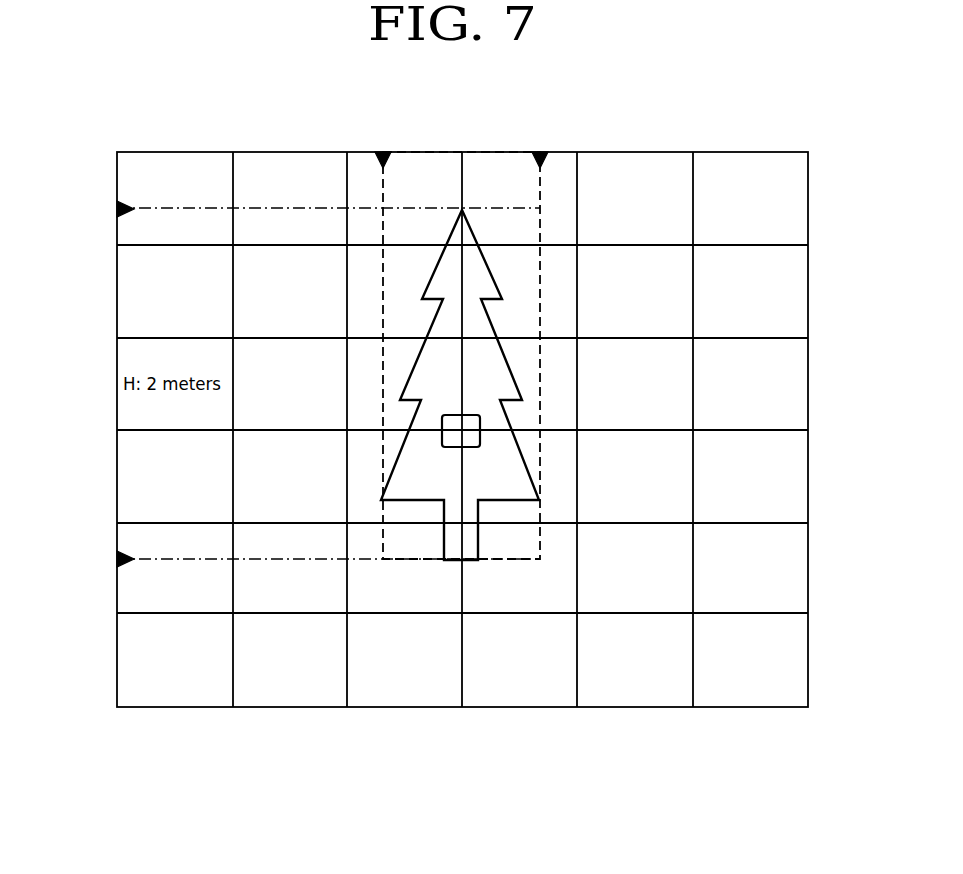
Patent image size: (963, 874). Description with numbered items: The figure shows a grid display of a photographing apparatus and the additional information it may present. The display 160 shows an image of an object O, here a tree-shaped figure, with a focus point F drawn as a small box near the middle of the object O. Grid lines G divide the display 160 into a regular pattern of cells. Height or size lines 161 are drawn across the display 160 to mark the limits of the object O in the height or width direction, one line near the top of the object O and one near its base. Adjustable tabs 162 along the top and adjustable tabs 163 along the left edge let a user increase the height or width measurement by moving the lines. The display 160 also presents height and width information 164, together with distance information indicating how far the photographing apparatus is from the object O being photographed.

The display 160 is at (626, 152).
The height or size lines 161 is at (308, 208).
The adjustable tabs 162 is at (540, 152).
The adjustable tabs 163 is at (117, 209).
The height and width information 164 is at (808, 632).
The object O is at (495, 325).
The focus point F is at (480, 415).
The grid lines G is at (770, 245).